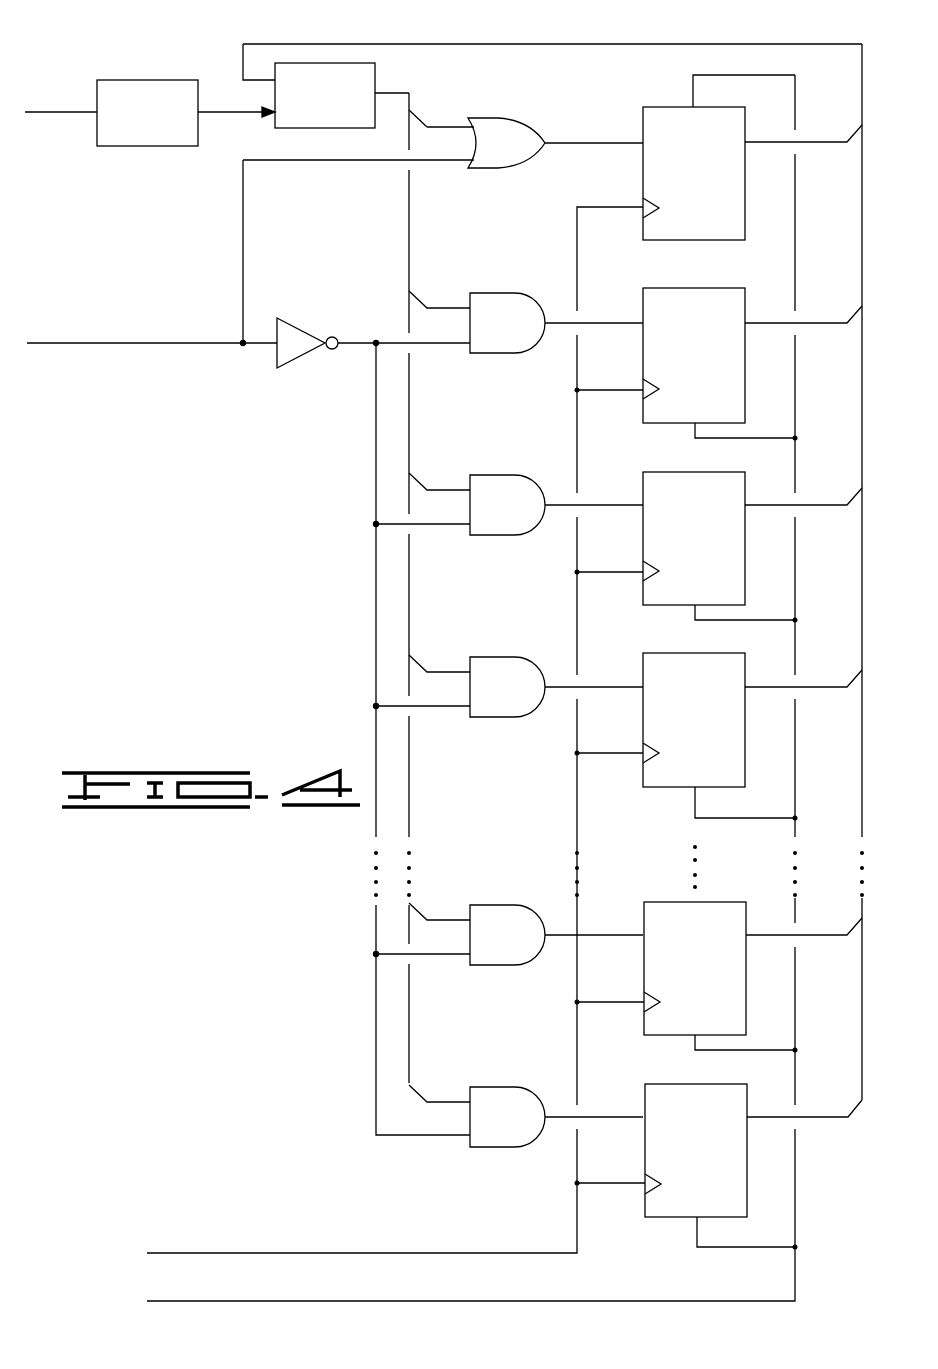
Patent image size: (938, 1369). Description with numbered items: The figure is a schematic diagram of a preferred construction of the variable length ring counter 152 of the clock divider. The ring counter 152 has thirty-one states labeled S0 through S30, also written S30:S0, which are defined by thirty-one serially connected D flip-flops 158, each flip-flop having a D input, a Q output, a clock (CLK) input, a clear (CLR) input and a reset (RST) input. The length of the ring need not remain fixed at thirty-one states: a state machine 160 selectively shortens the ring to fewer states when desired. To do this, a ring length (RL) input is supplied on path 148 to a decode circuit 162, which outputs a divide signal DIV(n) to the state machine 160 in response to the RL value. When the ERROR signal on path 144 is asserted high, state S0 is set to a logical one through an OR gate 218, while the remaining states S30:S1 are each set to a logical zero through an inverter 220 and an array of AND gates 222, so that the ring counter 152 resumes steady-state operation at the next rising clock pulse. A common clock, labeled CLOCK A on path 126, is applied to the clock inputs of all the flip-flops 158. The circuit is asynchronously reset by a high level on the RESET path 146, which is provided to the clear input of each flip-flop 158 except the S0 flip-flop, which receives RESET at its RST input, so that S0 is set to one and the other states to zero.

The variable length ring counter 152 is at (203, 44).
The path for ring length input 148 is at (58, 113).
The decode block 162 is at (135, 146).
The state machine 160 is at (326, 129).
The path for ERROR signal 144 is at (107, 344).
The inverter 220 is at (290, 317).
The OR gate 218 is at (497, 117).
The AND gates 222 is at (504, 295).
The D flip-flops 158 is at (674, 107).
The clock A line 126 is at (312, 1253).
The RESET path 146 is at (313, 1303).